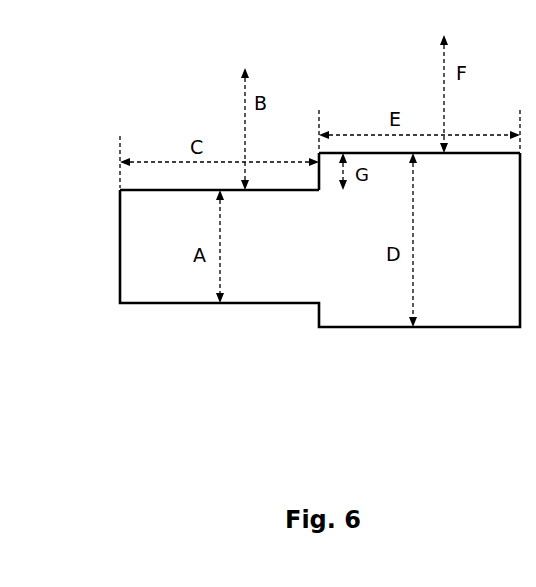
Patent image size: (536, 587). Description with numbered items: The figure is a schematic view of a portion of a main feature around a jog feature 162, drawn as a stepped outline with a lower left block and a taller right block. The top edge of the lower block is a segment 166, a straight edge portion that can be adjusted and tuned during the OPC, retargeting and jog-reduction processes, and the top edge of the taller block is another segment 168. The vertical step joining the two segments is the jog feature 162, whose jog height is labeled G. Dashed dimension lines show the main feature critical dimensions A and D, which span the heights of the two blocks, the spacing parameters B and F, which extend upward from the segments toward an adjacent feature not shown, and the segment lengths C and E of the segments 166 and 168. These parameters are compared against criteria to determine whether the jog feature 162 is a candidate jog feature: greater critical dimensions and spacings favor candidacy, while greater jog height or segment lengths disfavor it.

The jog feature 162 is at (321, 212).
The segment 166 is at (166, 196).
The segment 168 is at (493, 161).